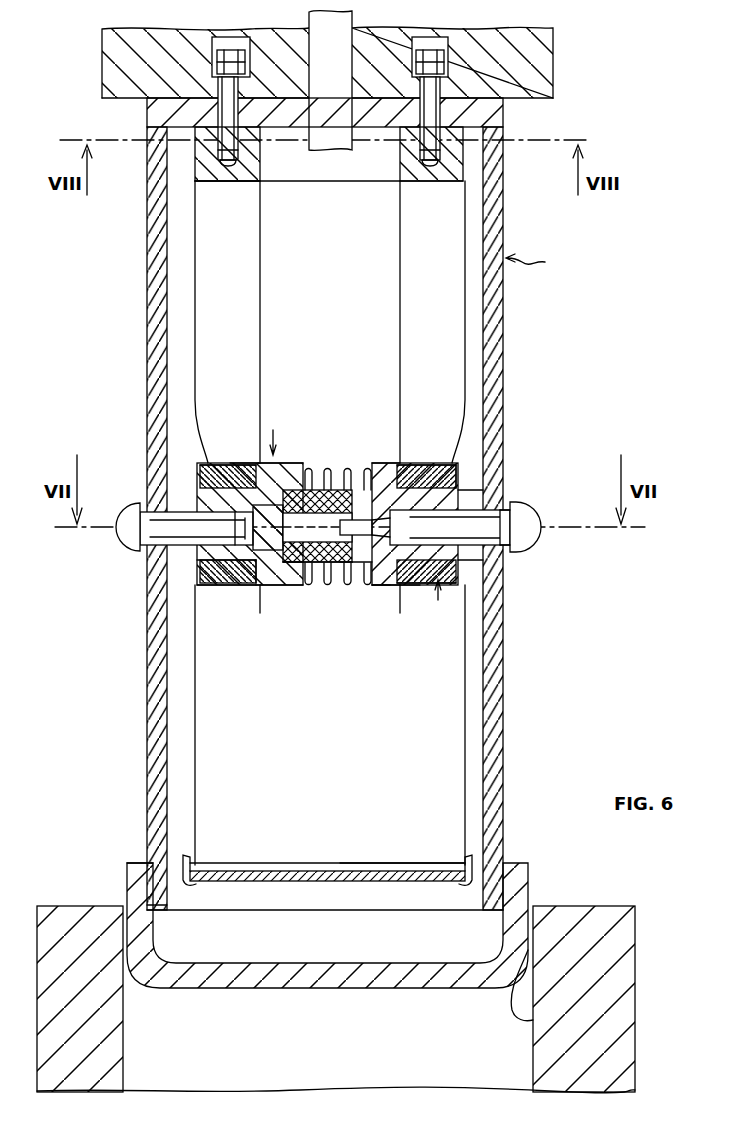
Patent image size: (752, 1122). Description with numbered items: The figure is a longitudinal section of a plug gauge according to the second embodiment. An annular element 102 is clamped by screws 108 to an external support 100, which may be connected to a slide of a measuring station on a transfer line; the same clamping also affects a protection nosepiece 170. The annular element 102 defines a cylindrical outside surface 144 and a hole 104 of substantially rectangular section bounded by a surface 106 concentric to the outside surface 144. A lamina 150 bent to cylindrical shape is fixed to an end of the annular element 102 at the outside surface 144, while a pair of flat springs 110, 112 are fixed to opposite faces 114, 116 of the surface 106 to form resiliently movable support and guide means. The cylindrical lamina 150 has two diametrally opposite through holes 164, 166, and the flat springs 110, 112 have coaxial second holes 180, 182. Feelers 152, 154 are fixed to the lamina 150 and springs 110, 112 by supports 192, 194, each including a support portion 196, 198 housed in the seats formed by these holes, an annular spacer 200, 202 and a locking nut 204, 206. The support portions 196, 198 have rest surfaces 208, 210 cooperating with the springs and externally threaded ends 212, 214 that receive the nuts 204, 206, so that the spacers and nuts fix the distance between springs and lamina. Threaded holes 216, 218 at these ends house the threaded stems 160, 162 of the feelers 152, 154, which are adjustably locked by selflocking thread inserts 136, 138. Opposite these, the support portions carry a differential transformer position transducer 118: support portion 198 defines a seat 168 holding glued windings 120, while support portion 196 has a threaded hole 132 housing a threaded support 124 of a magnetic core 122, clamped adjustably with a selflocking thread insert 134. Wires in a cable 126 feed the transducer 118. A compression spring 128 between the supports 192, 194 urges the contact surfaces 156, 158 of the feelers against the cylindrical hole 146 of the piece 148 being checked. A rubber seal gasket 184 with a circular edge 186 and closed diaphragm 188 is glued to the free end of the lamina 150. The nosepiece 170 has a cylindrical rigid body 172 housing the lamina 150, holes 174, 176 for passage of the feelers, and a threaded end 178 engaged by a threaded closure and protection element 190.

The external support 100 is at (548, 75).
The annular element 102 is at (213, 152).
The hole 104 is at (402, 200).
The surface 106 is at (245, 186).
The screws 108 is at (233, 58).
The flat spring 110 is at (405, 288).
The flat spring 112 is at (258, 268).
The face 114 is at (402, 236).
The face 116 is at (158, 246).
The differential transformer position transducer 118 is at (500, 342).
The windings 120 is at (326, 462).
The magnetic core 122 is at (345, 585).
The threaded support 124 is at (362, 580).
The cable 126 is at (322, 22).
The compression spring 128 is at (260, 613).
The threaded hole 132 is at (420, 463).
The selflocking thread insert 134 is at (460, 468).
The selflocking thread insert 136 is at (455, 558).
The selflocking thread insert 138 is at (124, 540).
The cylindrical outside surface 144 is at (500, 125).
The cylindrical hole 146 is at (590, 930).
The piece 148 is at (70, 925).
The cylindrical lamina 150 is at (404, 320).
The feeler 152 is at (522, 518).
The feeler 154 is at (142, 510).
The contact surface 156 is at (512, 548).
The contact surface 158 is at (195, 550).
The threaded stem 160 is at (522, 534).
The threaded stem 162 is at (268, 506).
The through hole 164 is at (430, 585).
The through hole 166 is at (200, 470).
The seat 168 is at (320, 462).
The protection nosepiece 170 is at (538, 263).
The cylindrical rigid body 172 is at (158, 770).
The hole 174 is at (452, 580).
The hole 176 is at (215, 585).
The threaded end 178 is at (165, 870).
The second hole 180 is at (438, 600).
The second hole 182 is at (280, 463).
The rubber seal gasket 184 is at (477, 905).
The circular edge 186 is at (385, 868).
The closed diaphragm 188 is at (350, 866).
The closure and protection element 190 is at (142, 895).
The support 192 is at (412, 586).
The support 194 is at (273, 430).
The support portion 196 is at (385, 587).
The support portion 198 is at (322, 570).
The annular spacer 200 is at (435, 463).
The annular spacer 202 is at (296, 572).
The locking nut 204 is at (442, 463).
The locking nut 206 is at (272, 586).
The rest surface 208 is at (400, 463).
The rest surface 210 is at (235, 463).
The threaded end 212 is at (470, 494).
The threaded end 214 is at (230, 572).
The threaded hole 216 is at (500, 508).
The threaded hole 218 is at (256, 575).